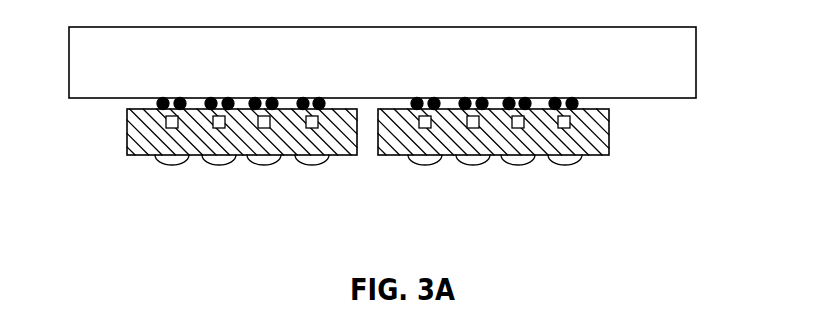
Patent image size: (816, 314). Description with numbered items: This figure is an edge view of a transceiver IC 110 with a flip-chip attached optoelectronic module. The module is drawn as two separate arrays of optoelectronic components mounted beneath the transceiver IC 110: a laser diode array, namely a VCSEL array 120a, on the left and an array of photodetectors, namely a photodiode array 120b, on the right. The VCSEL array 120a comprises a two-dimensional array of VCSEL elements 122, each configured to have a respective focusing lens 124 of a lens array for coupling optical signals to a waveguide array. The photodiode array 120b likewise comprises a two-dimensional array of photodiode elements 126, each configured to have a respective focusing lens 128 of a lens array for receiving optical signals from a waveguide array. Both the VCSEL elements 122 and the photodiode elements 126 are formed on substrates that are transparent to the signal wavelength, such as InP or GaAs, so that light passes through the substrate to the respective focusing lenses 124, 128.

The transceiver IC 110 is at (696, 44).
The VCSEL array 120a is at (127, 127).
The photodiode array 120b is at (609, 139).
The VCSEL element 122 is at (313, 128).
The focusing lens 124 is at (220, 164).
The photodiode element 126 is at (424, 128).
The focusing lens 128 is at (518, 164).